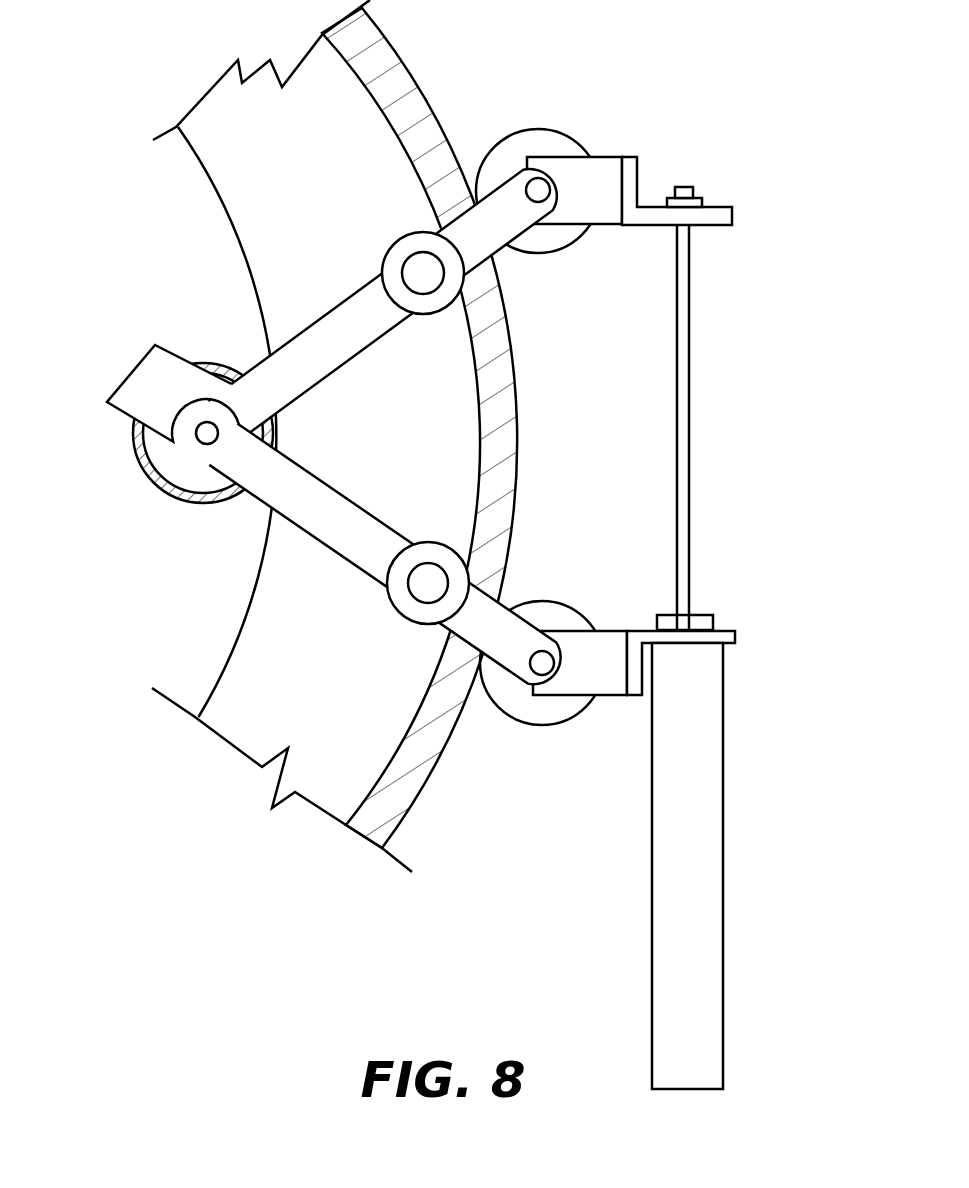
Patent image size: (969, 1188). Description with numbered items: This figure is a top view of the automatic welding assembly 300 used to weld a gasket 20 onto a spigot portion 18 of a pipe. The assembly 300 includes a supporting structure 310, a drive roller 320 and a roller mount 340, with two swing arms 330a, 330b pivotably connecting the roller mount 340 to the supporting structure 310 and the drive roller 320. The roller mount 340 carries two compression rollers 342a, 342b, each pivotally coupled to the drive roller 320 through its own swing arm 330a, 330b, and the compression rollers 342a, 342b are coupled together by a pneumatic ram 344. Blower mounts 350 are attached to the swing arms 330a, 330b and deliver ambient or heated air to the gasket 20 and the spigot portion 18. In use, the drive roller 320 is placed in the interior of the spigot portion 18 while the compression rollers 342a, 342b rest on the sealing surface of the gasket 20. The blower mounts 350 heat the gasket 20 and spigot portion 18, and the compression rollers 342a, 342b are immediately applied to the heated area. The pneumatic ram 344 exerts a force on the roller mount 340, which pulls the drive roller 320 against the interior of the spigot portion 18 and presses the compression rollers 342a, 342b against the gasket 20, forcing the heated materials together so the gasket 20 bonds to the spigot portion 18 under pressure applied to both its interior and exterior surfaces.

The spigot portion 18 is at (235, 152).
The gasket 20 is at (408, 98).
The automatic welding assembly 300 is at (92, 323).
The supporting structure 310 is at (173, 370).
The drive roller 320 is at (193, 503).
The swing arm 330a is at (365, 307).
The swing arm 330b is at (372, 562).
The roller mount 340 is at (642, 152).
The compression roller 342a is at (545, 138).
The compression roller 342b is at (548, 612).
The pneumatic ram 344 is at (707, 733).
The blower mount 350 is at (403, 243).